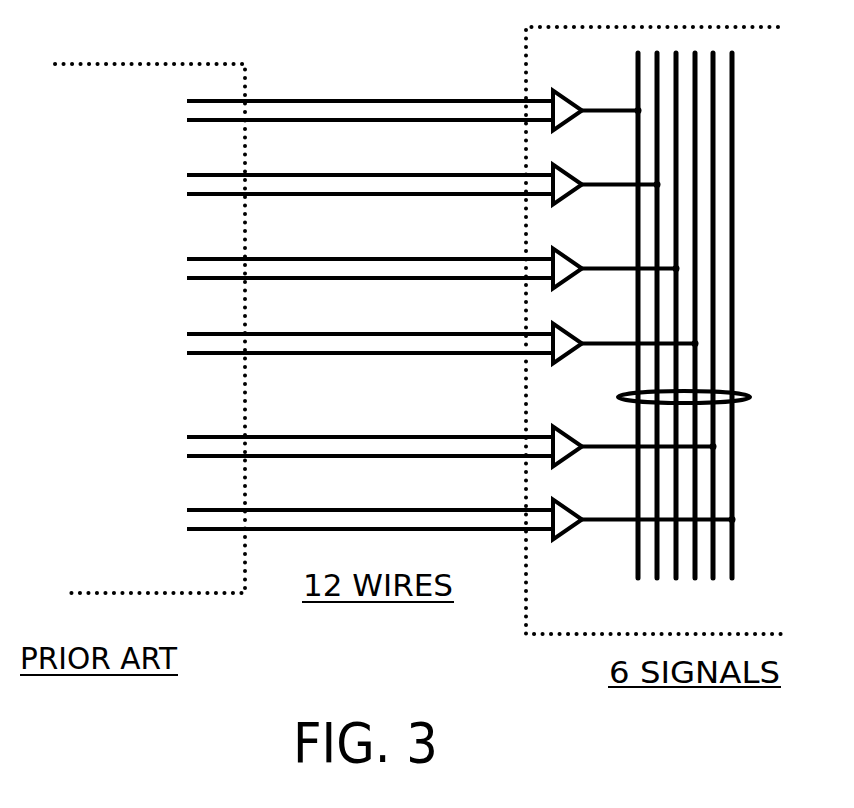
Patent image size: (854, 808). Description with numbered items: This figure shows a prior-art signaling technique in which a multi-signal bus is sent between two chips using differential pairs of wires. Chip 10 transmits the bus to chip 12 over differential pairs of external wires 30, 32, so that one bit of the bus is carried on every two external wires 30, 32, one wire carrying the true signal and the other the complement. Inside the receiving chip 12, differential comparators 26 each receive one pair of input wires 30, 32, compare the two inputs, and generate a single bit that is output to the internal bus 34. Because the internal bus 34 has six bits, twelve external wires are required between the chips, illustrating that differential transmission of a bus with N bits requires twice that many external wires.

The chip 10 is at (128, 441).
The chip 12 is at (587, 611).
The differential comparator 26 is at (565, 92).
The wire 30 is at (313, 101).
The wire 32 is at (370, 290).
The internal bus 34 is at (750, 397).